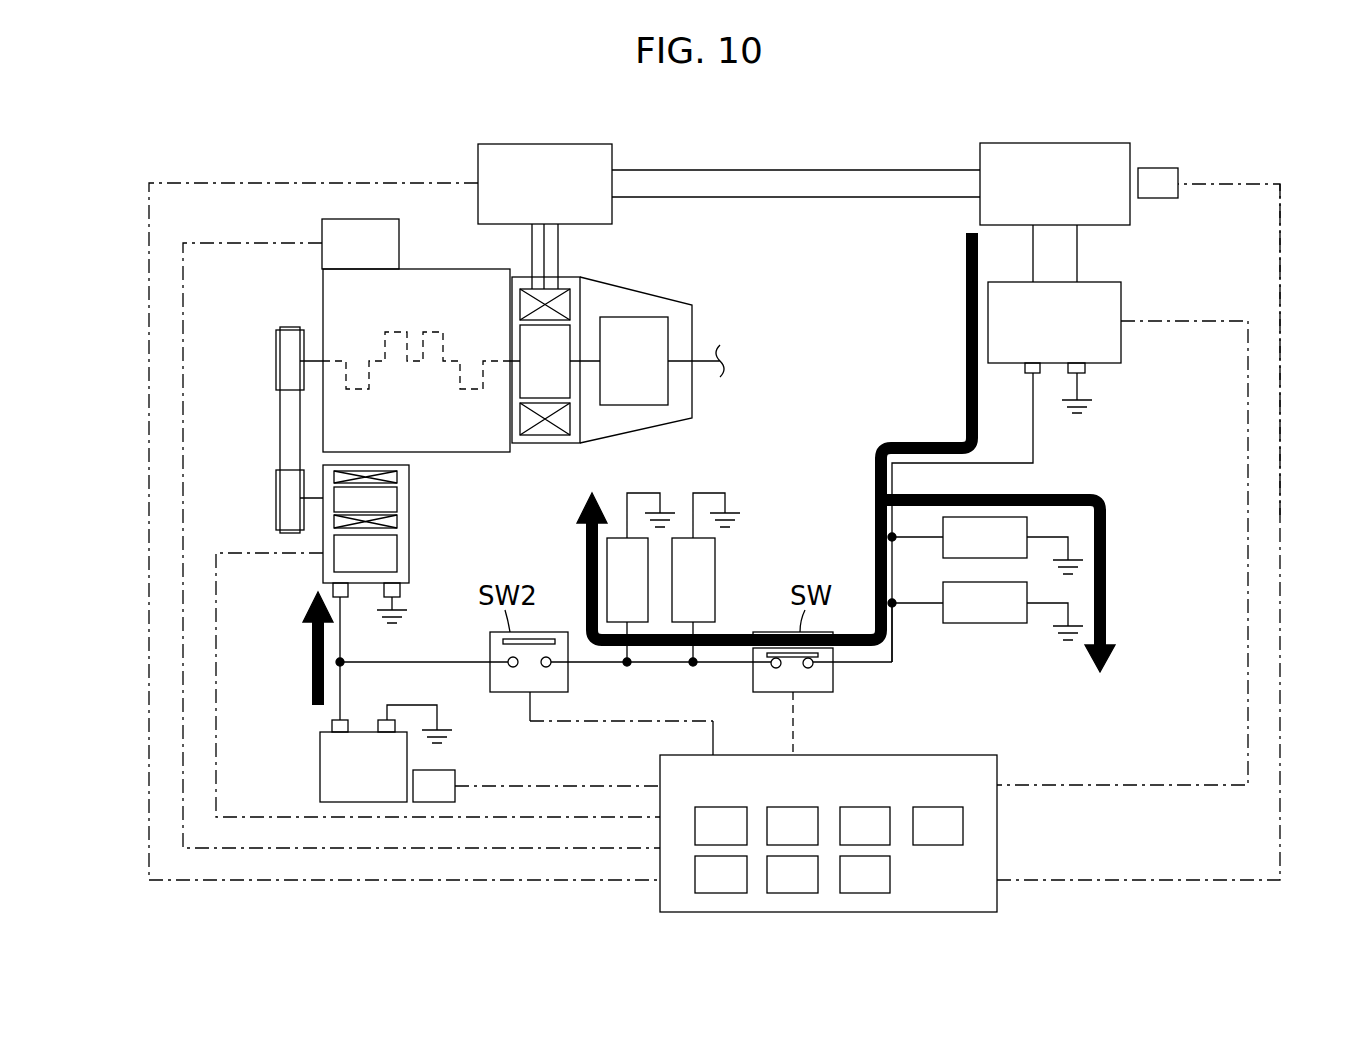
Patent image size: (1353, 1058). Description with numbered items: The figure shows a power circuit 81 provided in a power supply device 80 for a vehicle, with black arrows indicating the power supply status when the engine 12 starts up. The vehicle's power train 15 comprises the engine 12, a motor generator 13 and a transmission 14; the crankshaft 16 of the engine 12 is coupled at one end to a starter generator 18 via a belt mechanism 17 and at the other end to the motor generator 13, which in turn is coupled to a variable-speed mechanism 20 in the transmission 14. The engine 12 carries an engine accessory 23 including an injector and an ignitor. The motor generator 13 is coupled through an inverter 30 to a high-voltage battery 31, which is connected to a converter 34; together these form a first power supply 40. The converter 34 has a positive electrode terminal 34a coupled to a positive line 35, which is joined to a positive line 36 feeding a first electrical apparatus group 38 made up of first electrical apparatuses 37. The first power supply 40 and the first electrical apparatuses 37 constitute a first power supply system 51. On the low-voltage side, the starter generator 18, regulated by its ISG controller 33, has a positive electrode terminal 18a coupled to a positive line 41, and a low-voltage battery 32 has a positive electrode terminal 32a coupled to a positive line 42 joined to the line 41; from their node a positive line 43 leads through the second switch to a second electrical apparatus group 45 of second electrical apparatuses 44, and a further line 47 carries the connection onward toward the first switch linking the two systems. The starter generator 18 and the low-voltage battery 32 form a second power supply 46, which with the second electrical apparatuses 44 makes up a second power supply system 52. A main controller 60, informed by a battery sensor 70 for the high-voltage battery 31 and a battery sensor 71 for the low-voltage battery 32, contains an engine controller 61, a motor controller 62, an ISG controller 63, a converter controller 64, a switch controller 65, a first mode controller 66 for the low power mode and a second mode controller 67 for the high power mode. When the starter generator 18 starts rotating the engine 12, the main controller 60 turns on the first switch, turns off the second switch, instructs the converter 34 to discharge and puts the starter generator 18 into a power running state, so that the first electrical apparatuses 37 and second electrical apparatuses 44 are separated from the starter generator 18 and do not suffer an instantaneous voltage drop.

The power supply device 80 is at (158, 168).
The power circuit 81 is at (1245, 135).
The inverter 30 is at (478, 158).
The high-voltage battery 31 is at (980, 155).
The first power supply 40 is at (1071, 186).
The battery sensor 70 is at (1160, 200).
The converter 34 is at (1121, 350).
The positive electrode terminal 34a is at (1027, 378).
The positive line 35 is at (1034, 440).
The first electrical apparatus group 38 is at (1043, 652).
The first power supply system 51 is at (1068, 553).
The first electrical apparatus 37 is at (943, 553).
The positive line 36 is at (892, 642).
The engine 12 is at (323, 308).
The engine accessory 23 is at (399, 248).
The crankshaft 16 is at (407, 361).
The belt mechanism 17 is at (285, 425).
The power train 15 is at (653, 365).
The motor generator 13 is at (538, 445).
The transmission 14 is at (662, 420).
The variable-speed mechanism 20 is at (635, 317).
The starter generator 18 is at (410, 502).
The positive electrode terminal 18a is at (342, 592).
The ISG controller 33 is at (398, 564).
The positive line 41 is at (342, 636).
The positive line 42 is at (342, 692).
The positive electrode terminal 32a is at (332, 724).
The low-voltage battery 32 is at (320, 785).
The battery sensor 71 is at (455, 774).
The second power supply 46 is at (305, 652).
The positive line 43 is at (460, 665).
The power line 47 is at (722, 668).
The second power supply system 52 is at (714, 555).
The second electrical apparatus group 45 is at (703, 565).
The second electrical apparatus 44 is at (618, 535).
The main controller 60 is at (860, 833).
The engine controller 61 is at (721, 826).
The motor controller 62 is at (792, 826).
The ISG controller 63 is at (865, 826).
The converter controller 64 is at (938, 826).
The switch controller 65 is at (721, 874).
The first mode controller 66 is at (792, 874).
The second mode controller 67 is at (865, 874).